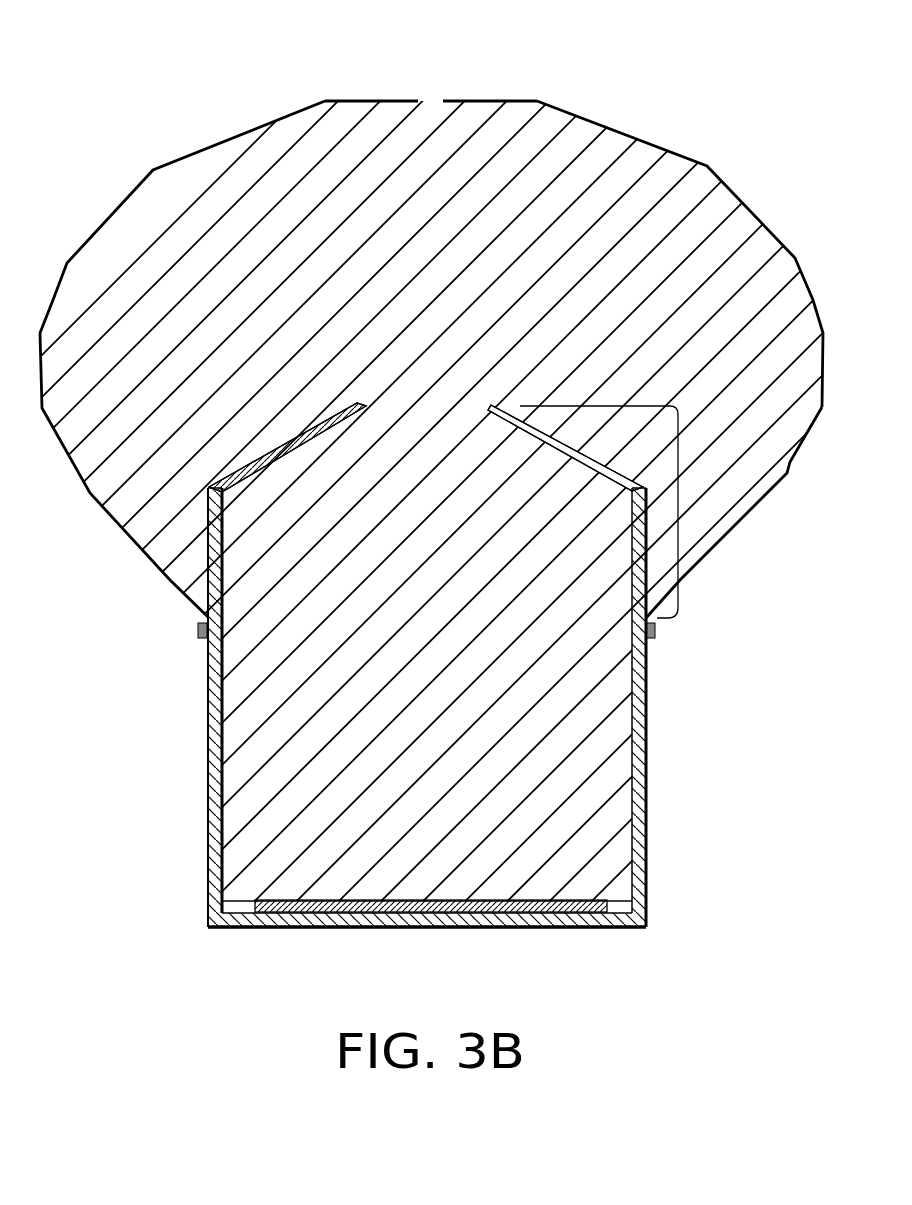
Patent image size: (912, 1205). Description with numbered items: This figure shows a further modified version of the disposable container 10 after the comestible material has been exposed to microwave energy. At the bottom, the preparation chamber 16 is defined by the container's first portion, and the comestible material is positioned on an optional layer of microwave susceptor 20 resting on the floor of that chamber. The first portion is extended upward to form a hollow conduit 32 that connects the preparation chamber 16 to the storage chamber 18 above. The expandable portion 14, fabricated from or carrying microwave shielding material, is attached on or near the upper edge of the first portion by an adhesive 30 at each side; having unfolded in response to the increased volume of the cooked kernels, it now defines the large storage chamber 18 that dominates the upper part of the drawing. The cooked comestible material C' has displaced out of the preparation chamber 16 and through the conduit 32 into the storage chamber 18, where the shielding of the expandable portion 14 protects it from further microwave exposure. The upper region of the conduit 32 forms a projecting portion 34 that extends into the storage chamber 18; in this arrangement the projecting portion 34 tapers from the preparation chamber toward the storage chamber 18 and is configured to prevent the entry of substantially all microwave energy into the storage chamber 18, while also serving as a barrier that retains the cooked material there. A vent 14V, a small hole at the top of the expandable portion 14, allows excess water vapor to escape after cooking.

The container 10 is at (456, 500).
The expandable portion 14 is at (456, 500).
The vent 14V is at (430, 92).
The storage chamber 18 is at (774, 512).
The cooked comestible material C' is at (198, 462).
The projecting portion 34 is at (678, 558).
The preparation chamber 16 is at (457, 726).
The hollow conduit 32 is at (568, 757).
The adhesive 30 is at (651, 641).
The microwave susceptor 20 is at (457, 925).